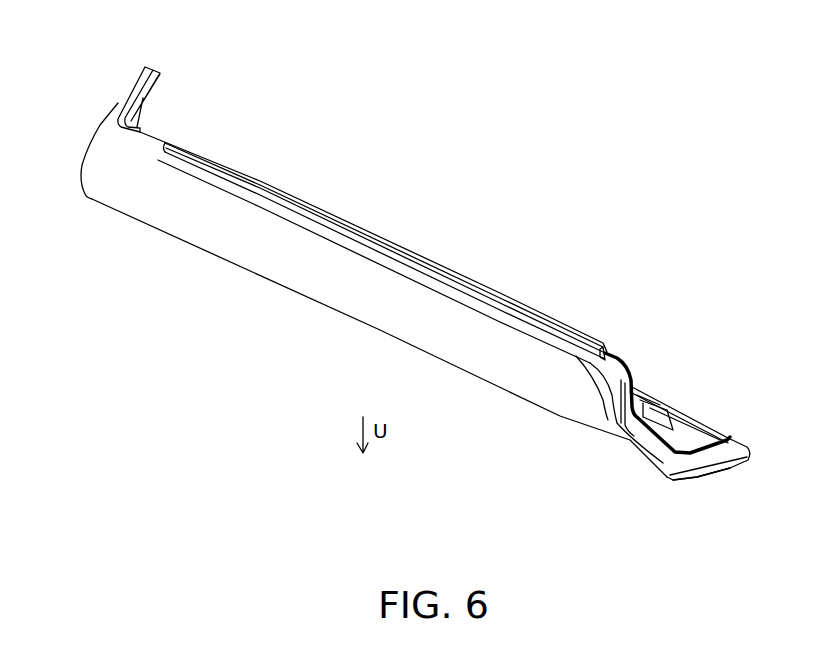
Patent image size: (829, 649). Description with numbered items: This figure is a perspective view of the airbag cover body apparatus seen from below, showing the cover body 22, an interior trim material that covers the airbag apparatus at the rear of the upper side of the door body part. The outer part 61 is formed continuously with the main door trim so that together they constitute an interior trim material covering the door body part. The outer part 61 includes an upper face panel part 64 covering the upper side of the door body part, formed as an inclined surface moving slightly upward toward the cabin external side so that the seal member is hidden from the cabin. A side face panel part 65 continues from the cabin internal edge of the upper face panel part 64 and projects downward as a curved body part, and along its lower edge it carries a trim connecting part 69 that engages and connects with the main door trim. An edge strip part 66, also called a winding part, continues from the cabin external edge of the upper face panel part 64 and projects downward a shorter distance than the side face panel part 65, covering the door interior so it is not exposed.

The cover body 22 is at (221, 48).
The outer part 61 is at (220, 240).
The upper face panel part 64 is at (678, 482).
The side face panel part 65 is at (268, 268).
The edge strip part 66 is at (652, 395).
The trim connecting part 69 is at (395, 247).